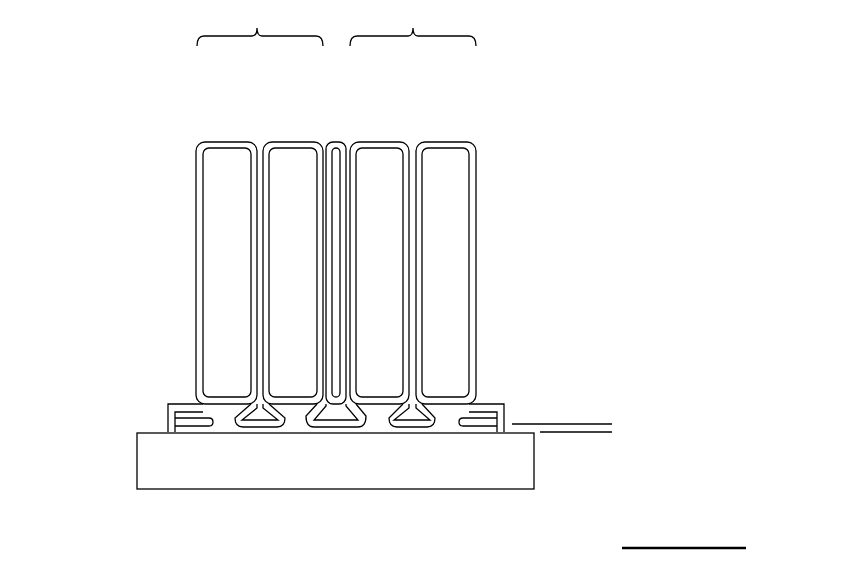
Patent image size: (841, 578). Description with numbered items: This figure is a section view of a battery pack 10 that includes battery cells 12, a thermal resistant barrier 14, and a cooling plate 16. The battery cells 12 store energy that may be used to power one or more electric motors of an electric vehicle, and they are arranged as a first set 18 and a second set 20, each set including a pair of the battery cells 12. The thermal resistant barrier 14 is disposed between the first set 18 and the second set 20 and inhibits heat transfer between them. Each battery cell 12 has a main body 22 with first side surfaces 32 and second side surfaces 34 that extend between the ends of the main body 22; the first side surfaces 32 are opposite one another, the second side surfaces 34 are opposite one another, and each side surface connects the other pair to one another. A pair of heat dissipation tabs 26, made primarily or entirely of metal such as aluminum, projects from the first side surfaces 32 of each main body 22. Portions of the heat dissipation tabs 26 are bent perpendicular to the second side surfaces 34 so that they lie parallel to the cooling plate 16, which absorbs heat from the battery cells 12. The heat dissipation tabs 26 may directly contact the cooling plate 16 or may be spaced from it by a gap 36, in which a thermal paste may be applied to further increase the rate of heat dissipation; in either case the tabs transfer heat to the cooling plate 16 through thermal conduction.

The battery pack 10 is at (532, 56).
The battery cells 12 is at (224, 139).
The thermal resistant barrier 14 is at (337, 139).
The cooling plate 16 is at (137, 456).
The first set 18 is at (260, 26).
The second set 20 is at (413, 26).
The main body 22 is at (347, 232).
The heat dissipation tabs 26 is at (187, 426).
The first side surfaces 32 is at (215, 142).
The second side surfaces 34 is at (250, 290).
The gap 36 is at (578, 480).